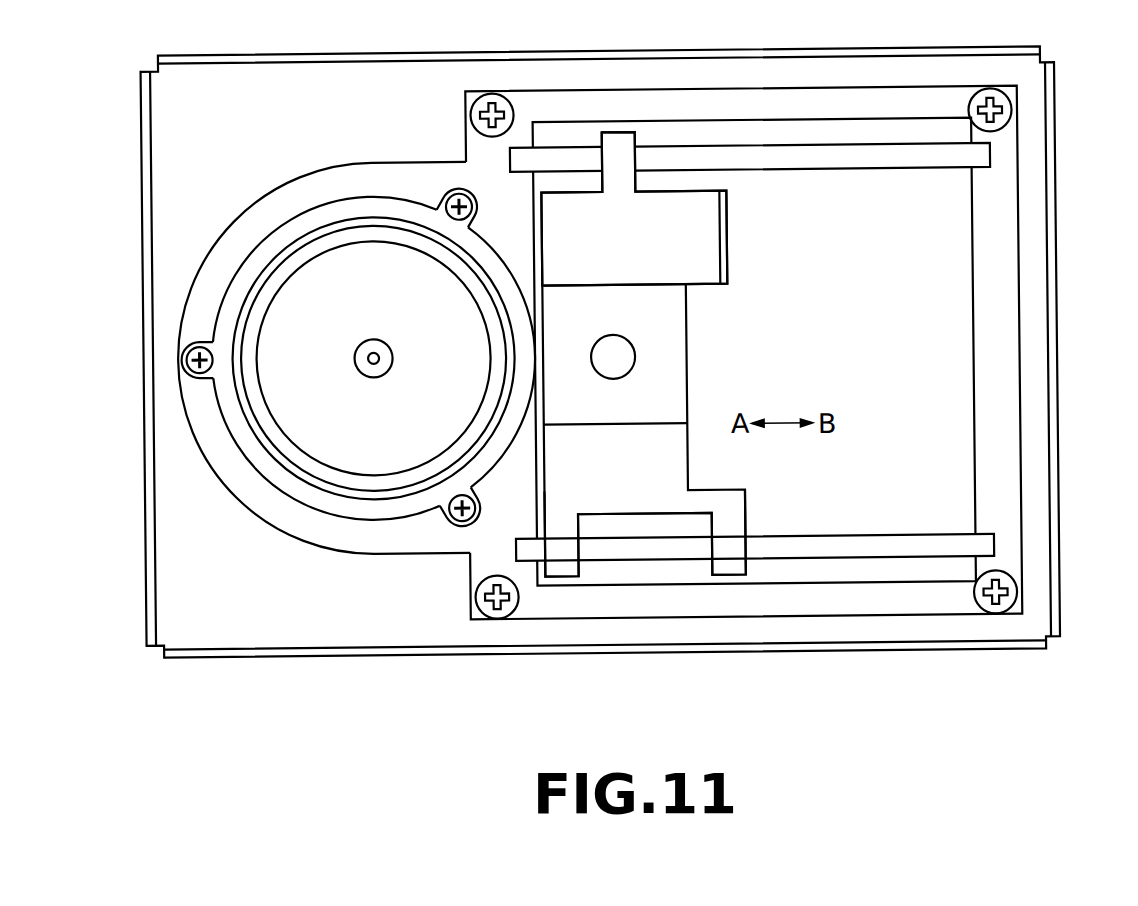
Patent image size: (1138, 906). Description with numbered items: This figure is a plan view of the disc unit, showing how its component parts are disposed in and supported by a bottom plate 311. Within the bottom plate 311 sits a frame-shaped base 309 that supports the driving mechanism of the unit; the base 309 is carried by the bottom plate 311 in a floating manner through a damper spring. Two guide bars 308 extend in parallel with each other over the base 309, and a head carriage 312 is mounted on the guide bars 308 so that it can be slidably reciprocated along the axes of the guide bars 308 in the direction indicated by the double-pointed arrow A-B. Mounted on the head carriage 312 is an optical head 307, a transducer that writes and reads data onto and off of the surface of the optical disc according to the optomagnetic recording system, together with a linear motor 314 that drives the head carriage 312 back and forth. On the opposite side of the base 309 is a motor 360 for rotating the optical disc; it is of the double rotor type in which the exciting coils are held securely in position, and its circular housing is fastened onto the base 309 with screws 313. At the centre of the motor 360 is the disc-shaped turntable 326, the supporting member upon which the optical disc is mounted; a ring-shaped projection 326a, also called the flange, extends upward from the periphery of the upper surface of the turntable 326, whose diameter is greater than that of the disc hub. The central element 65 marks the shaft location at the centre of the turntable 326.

The spindle shaft 65 is at (388, 344).
The optical head 307 is at (663, 309).
The guide bars 308 is at (834, 152).
The frame-shaped base 309 is at (1003, 334).
The bottom plate 311 is at (1052, 115).
The head carriage 312 is at (631, 503).
The screws 313 is at (458, 202).
The linear motor 314 is at (677, 198).
The turntable 326 is at (326, 442).
The ring-shaped projection 326a is at (244, 406).
The motor 360 is at (306, 219).